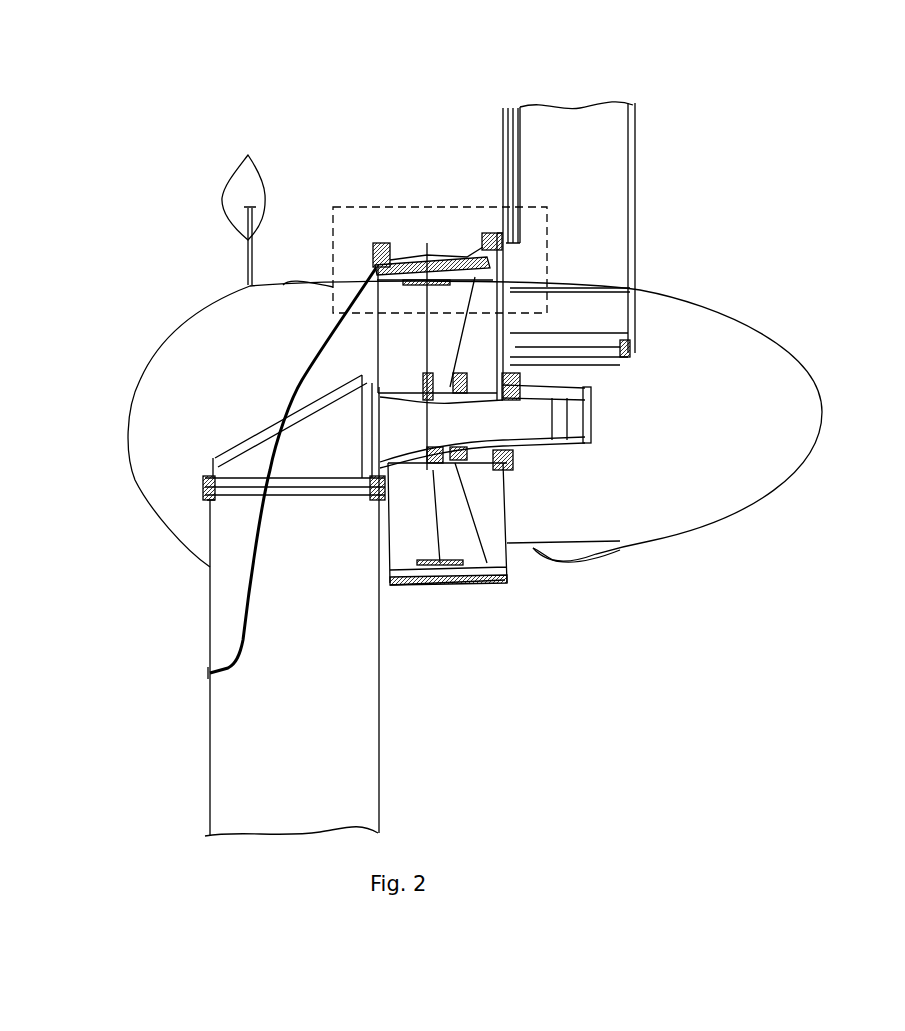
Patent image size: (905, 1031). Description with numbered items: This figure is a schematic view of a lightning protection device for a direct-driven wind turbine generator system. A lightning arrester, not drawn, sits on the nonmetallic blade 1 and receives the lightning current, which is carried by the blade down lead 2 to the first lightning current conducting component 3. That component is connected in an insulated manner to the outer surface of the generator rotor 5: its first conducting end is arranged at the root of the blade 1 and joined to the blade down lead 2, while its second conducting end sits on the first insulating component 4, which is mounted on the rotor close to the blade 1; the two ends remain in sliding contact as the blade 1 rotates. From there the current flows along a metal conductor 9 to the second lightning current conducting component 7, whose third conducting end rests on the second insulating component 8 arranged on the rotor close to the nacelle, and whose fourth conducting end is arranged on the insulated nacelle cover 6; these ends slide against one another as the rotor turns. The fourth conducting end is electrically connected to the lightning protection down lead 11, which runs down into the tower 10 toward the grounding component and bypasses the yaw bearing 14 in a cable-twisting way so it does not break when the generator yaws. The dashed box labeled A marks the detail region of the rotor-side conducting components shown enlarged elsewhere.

The nonmetallic blade 1 is at (620, 266).
The blade down lead 2 is at (530, 108).
The first lightning current conducting component 3 is at (498, 233).
The first insulating component 4 is at (487, 240).
The generator rotor 5 is at (462, 575).
The insulated nacelle cover 6 is at (128, 437).
The second lightning current conducting component 7 is at (378, 243).
The second insulating component 8 is at (392, 250).
The metal conductor 9 is at (427, 243).
The tower 10 is at (243, 753).
The lightning protection down lead 11 is at (243, 630).
The yaw bearing 14 is at (210, 485).
The detail region A is at (533, 207).